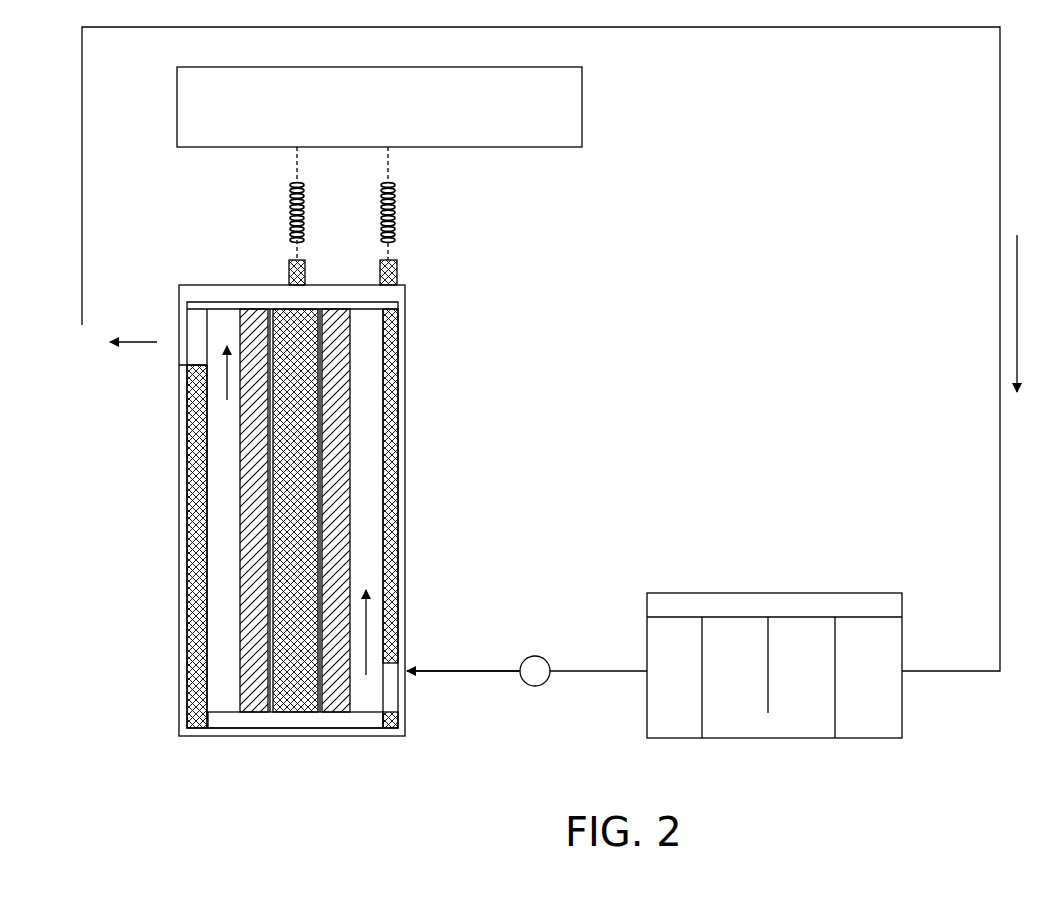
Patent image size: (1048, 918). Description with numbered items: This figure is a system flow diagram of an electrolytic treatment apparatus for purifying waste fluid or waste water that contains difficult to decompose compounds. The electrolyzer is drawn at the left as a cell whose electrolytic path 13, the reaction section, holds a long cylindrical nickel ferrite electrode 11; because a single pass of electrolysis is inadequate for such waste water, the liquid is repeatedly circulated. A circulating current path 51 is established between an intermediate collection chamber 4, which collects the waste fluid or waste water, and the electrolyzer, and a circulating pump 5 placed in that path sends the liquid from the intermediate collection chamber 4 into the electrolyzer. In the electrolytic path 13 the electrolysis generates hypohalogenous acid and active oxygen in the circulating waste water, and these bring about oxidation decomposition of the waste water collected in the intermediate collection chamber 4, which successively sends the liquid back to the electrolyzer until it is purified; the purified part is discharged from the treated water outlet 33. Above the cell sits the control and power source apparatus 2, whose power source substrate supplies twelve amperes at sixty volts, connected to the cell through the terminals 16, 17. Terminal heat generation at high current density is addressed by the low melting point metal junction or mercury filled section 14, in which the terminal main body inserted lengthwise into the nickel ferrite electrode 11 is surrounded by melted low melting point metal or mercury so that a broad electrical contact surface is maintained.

The control•power source apparatus 2 is at (564, 107).
The intermediate collection chamber 4 is at (792, 738).
The circulating pump 5 is at (539, 653).
The nickel ferrite electrode 11 is at (258, 642).
The electrolytic path 13 is at (228, 552).
The low melting point metal junction or mercury filled section 14 is at (293, 690).
The positive terminal 16 is at (289, 260).
The negative terminal 17 is at (396, 260).
The treated water outlet 33 is at (178, 327).
The circulating current path 51 is at (1000, 270).